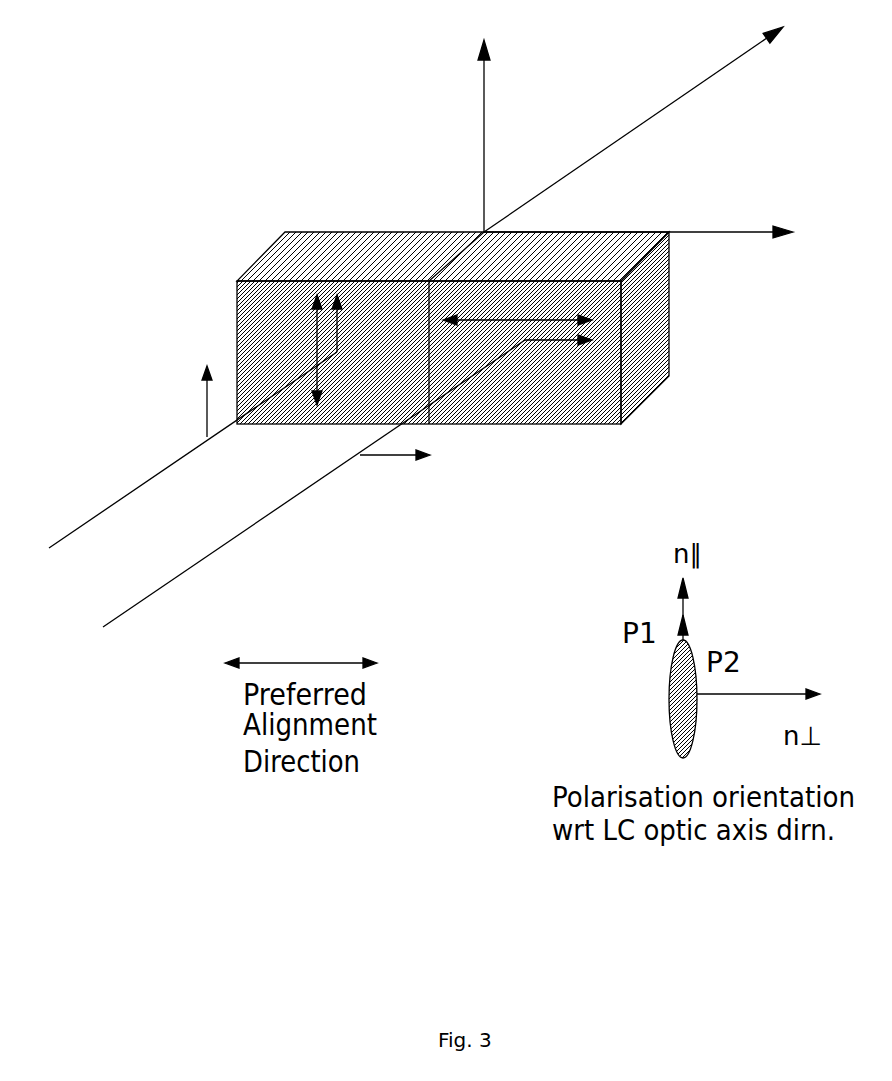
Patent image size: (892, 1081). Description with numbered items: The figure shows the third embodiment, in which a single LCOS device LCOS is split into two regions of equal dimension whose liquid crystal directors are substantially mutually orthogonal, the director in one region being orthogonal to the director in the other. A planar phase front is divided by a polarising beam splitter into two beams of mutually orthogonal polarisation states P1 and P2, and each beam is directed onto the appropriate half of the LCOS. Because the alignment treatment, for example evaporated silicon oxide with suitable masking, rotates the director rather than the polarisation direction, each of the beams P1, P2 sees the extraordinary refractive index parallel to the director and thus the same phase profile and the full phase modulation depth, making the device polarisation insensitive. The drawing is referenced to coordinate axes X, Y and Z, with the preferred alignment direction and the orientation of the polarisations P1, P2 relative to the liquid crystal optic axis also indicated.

The X axis X is at (638, 247).
The Y axis Y is at (469, 134).
The Z axis Z is at (633, 124).
The LCOS device LCOS is at (492, 335).
The first polarisation state P1 is at (193, 447).
The second polarisation state P2 is at (347, 481).